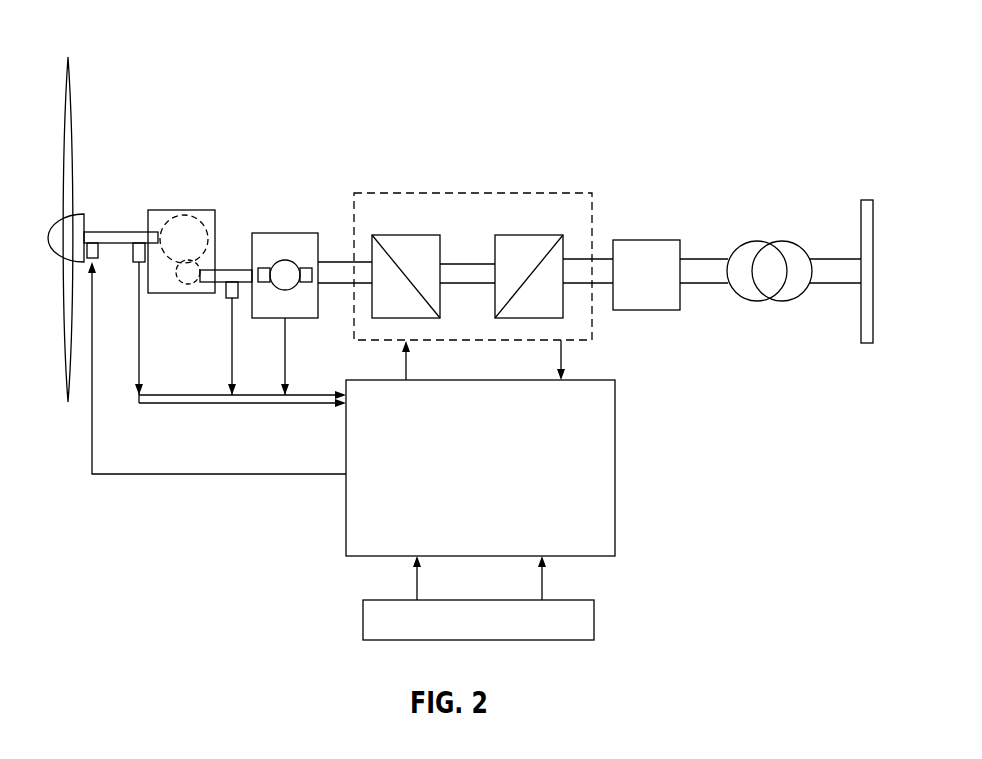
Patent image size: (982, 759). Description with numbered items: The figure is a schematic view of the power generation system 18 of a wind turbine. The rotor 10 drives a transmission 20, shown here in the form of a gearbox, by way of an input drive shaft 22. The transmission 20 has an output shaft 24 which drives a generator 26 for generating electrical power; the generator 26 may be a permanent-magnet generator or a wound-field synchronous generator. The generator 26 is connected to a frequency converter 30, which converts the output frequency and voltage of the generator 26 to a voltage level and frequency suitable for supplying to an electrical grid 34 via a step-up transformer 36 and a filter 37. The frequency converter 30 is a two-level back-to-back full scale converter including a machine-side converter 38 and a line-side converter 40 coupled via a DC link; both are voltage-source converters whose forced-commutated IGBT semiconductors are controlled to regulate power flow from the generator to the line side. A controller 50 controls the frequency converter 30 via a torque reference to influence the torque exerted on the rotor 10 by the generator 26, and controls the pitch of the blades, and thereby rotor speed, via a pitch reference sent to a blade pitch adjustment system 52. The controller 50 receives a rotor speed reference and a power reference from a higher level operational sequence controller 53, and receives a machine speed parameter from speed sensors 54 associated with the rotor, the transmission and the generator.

The rotor 10 is at (88, 118).
The wind turbine system 18 is at (760, 34).
The transmission 20 is at (183, 210).
The input drive shaft 22 is at (112, 232).
The output shaft 24 is at (228, 270).
The generator 26 is at (285, 233).
The frequency converter 30 is at (542, 193).
The electrical grid 34 is at (873, 250).
The step-up transformer 36 is at (770, 240).
The filter 37 is at (661, 289).
The machine-side converter 38 is at (405, 235).
The line-side converter 40 is at (527, 235).
The controller 50 is at (494, 483).
The blade pitch adjustment system 52 is at (91, 270).
The operational sequence controller 53 is at (494, 635).
The speed sensors 54 is at (137, 264).